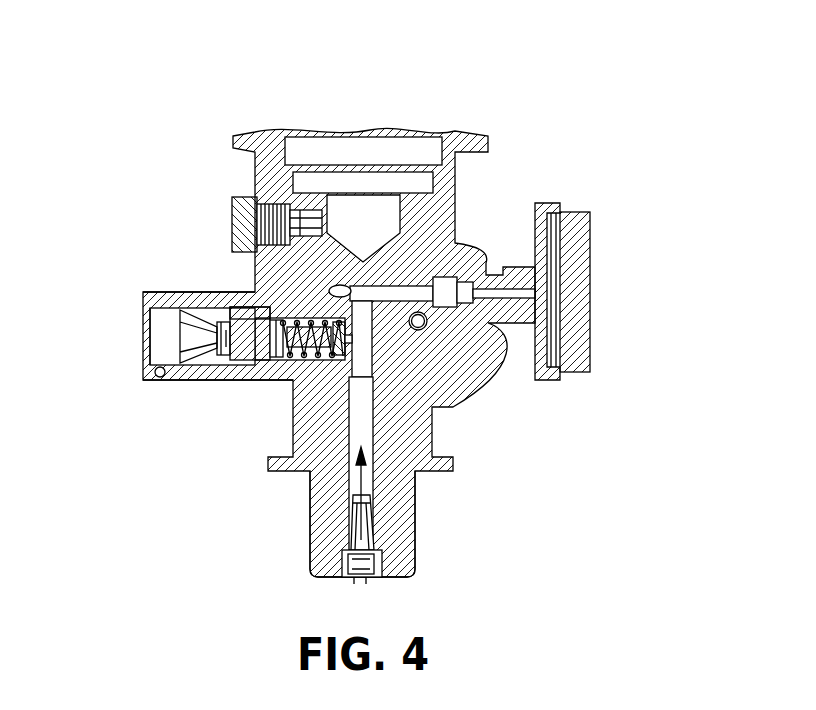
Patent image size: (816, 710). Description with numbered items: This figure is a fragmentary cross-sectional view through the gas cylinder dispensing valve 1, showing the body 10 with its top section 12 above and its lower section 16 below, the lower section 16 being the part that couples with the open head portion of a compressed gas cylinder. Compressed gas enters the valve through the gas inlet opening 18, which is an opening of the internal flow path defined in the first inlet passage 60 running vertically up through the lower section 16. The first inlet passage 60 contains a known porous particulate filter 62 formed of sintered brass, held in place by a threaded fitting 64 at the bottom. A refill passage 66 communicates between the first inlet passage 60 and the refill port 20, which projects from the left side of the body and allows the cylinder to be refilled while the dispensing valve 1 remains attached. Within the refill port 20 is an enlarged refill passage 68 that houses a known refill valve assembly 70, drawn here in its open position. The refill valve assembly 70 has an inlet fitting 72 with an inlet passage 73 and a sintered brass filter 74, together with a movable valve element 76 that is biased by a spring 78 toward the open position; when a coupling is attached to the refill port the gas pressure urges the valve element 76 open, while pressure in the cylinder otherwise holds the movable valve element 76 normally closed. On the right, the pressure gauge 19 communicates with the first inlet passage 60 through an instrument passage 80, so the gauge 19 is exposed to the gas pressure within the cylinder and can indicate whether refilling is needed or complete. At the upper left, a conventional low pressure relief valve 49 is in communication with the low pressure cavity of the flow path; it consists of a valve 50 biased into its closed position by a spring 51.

The gas cylinder dispensing valve 1 is at (376, 330).
The body 10 is at (403, 371).
The top section 12 is at (468, 192).
The lower section 16 is at (297, 520).
The inlet opening 18 is at (355, 580).
The pressure gauge 19 is at (590, 270).
The refill port 20 is at (180, 384).
The low pressure relief valve 49 is at (222, 243).
The valve 50 is at (320, 228).
The spring 51 is at (258, 222).
The first inlet passage 60 is at (220, 368).
The porous particulate filter 62 is at (370, 500).
The threaded fitting 64 is at (370, 565).
The refill passage 66 is at (345, 338).
The enlarged refill passage 68 is at (163, 378).
The refill valve assembly 70 is at (229, 382).
The inlet fitting 72 is at (192, 337).
The inlet passage 73 is at (258, 318).
The filter 74 is at (213, 372).
The movable valve element 76 is at (266, 372).
The spring 78 is at (277, 397).
The instrument passage 80 is at (418, 290).